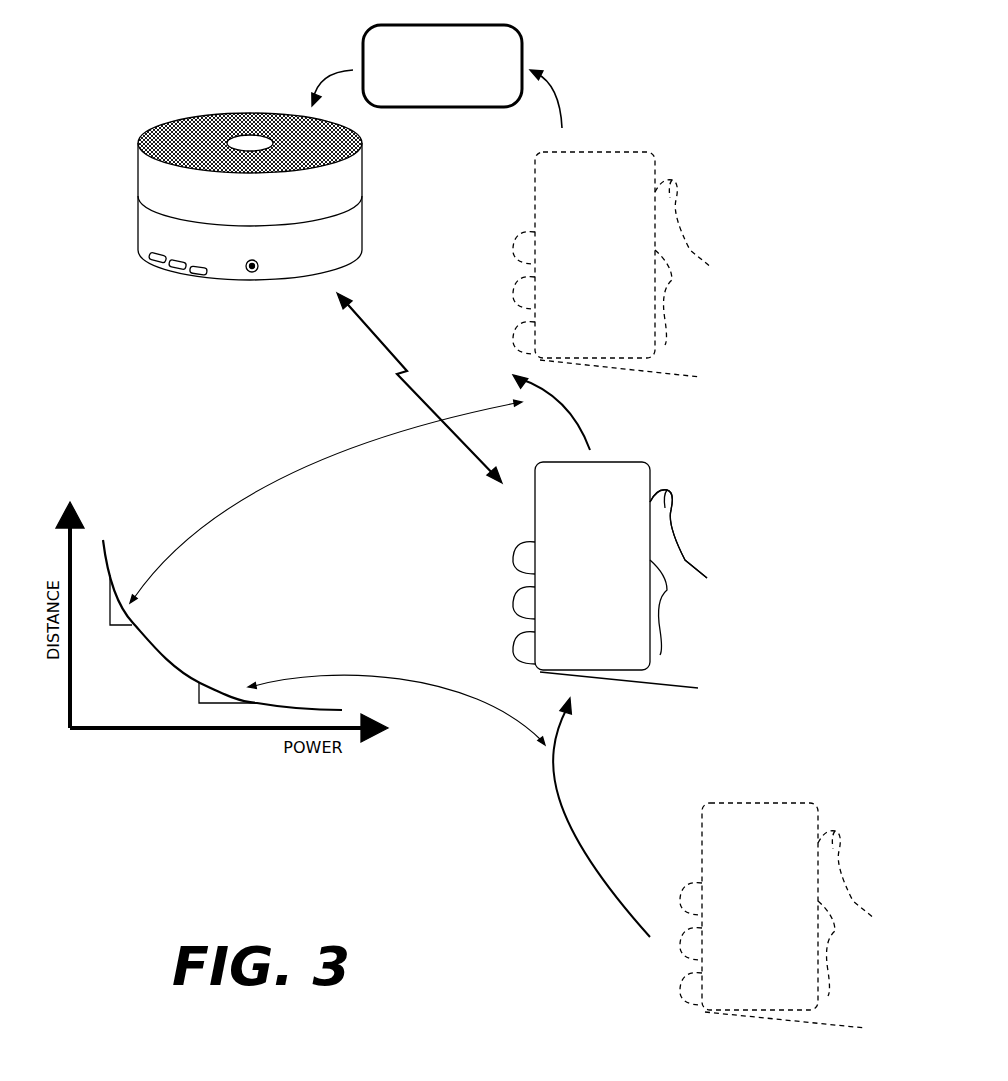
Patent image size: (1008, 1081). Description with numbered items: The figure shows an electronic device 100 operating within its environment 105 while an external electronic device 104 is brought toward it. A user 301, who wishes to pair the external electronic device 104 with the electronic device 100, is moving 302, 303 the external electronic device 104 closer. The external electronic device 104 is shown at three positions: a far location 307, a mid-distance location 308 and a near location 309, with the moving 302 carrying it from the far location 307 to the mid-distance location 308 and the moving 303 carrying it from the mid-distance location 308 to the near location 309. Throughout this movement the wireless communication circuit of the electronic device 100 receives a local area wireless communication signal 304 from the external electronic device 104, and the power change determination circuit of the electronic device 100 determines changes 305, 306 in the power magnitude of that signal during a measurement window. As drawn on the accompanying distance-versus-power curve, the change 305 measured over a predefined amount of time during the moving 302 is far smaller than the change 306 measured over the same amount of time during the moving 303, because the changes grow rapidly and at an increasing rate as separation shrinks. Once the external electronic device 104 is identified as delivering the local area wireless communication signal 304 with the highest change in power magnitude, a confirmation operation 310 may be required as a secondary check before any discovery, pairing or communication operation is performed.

The electronic device 100 is at (118, 202).
The external electronic device 104 is at (607, 475).
The environment 105 is at (199, 400).
The user 301 is at (680, 553).
The moving 302 is at (568, 832).
The moving 303 is at (572, 403).
The local area wireless communication signal 304 is at (392, 352).
The change in power magnitude 305 is at (182, 688).
The change in power magnitude 306 is at (120, 641).
The far location 307 is at (783, 762).
The mid-distance location 308 is at (741, 497).
The near location 309 is at (728, 173).
The confirmation operation 310 is at (422, 107).